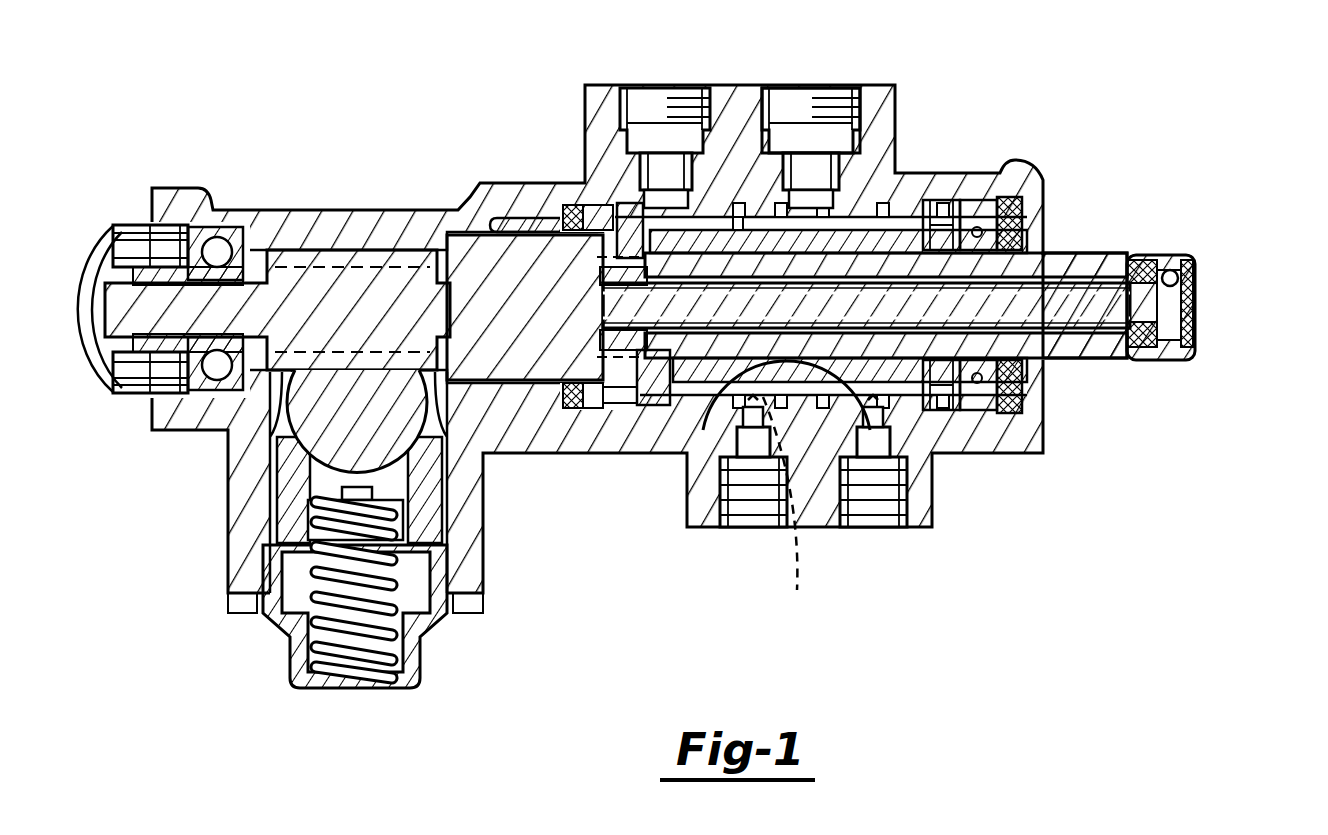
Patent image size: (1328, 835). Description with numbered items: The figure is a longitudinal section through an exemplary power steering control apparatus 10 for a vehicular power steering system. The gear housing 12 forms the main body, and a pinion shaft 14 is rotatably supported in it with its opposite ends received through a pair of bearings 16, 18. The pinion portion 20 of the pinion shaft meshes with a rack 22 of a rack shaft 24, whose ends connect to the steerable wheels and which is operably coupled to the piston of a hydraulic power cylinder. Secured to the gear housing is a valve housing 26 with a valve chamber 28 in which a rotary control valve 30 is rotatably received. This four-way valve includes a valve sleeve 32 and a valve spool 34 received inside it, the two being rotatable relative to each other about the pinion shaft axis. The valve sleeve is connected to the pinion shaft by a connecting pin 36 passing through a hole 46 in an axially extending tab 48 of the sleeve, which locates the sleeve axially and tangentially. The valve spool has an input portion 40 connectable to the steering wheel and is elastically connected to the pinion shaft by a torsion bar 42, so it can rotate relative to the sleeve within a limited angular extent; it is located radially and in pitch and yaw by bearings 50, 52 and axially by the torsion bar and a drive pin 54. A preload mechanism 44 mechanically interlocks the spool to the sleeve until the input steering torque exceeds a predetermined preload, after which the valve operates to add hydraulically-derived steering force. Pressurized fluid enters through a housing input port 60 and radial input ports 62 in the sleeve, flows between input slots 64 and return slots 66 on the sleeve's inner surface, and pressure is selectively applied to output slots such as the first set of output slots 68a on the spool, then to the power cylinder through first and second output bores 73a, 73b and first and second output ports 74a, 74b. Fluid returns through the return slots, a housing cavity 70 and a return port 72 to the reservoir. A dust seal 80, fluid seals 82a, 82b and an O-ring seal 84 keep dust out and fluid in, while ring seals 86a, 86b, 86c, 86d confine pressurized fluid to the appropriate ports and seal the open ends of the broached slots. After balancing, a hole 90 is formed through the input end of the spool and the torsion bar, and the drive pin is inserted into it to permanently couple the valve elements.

The power steering control apparatus 10 is at (990, 98).
The gear housing 12 is at (505, 432).
The pinion shaft 14 is at (460, 243).
The bearing 16 is at (215, 238).
The bearing 18 is at (507, 218).
The pinion portion 20 is at (360, 250).
The rack 22 is at (335, 365).
The rack shaft 24 is at (333, 448).
The valve housing 26 is at (890, 135).
The valve chamber 28 is at (945, 380).
The rotary control valve 30 is at (962, 197).
The valve sleeve 32 is at (685, 415).
The valve spool 34 is at (1043, 262).
The connecting pin 36 is at (625, 203).
The input portion 40 is at (1137, 254).
The torsion bar 42 is at (1082, 303).
The preload mechanism 44 is at (615, 412).
The hole 46 is at (612, 203).
The axially extending tab 48 is at (593, 208).
The bearing 50 is at (632, 412).
The bearing 52 is at (990, 383).
The drive pin 54 is at (1170, 358).
The housing input port 60 is at (863, 200).
The radial input ports 62 is at (780, 200).
The input slots 64 is at (900, 212).
The return slots 66 is at (737, 215).
The first set of output slots 68a is at (820, 355).
The housing cavity 70 is at (600, 412).
The return port 72 is at (627, 165).
The first output bore 73a is at (880, 410).
The second output bore 73b is at (797, 507).
The first output port 74a is at (890, 527).
The second output port 74b is at (735, 527).
The dust seal 80 is at (1000, 192).
The fluid seal 82a is at (565, 207).
The fluid seal 82b is at (1015, 175).
The O-ring seal 84 is at (1133, 357).
The ring seal 86a is at (722, 215).
The ring seal 86b is at (812, 215).
The ring seal 86c is at (877, 212).
The ring seal 86d is at (938, 190).
The hole 90 is at (1196, 290).